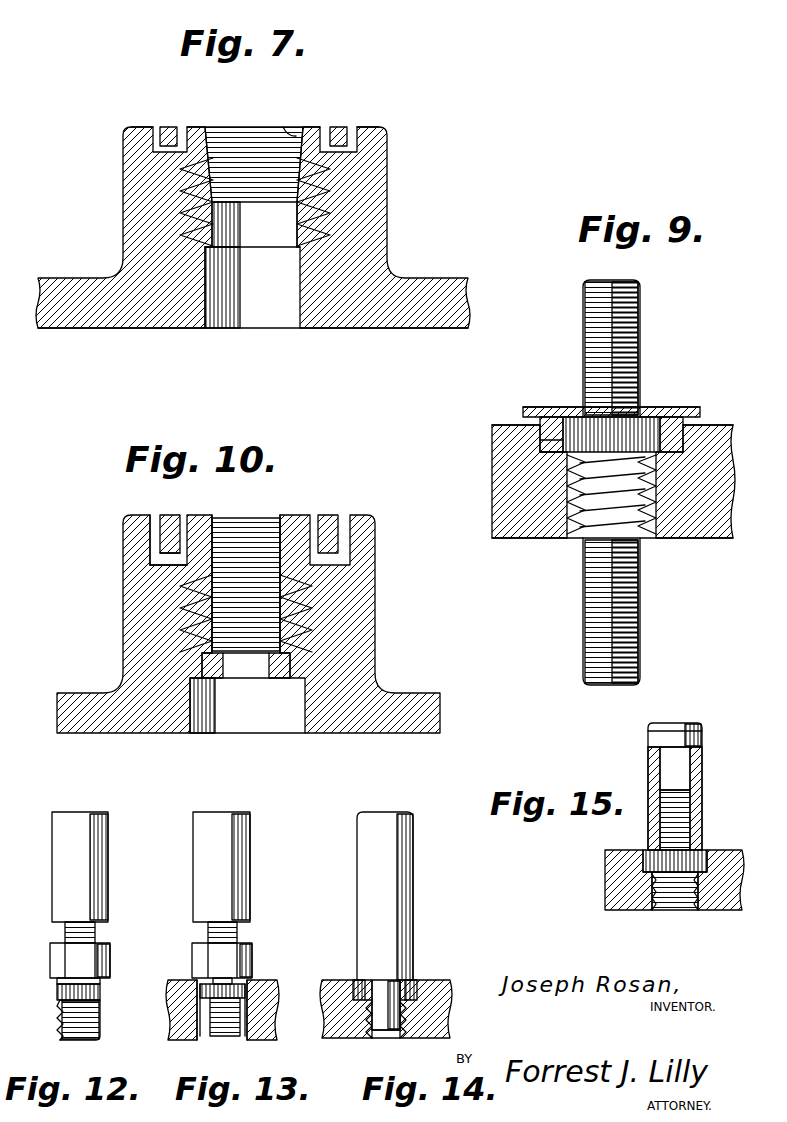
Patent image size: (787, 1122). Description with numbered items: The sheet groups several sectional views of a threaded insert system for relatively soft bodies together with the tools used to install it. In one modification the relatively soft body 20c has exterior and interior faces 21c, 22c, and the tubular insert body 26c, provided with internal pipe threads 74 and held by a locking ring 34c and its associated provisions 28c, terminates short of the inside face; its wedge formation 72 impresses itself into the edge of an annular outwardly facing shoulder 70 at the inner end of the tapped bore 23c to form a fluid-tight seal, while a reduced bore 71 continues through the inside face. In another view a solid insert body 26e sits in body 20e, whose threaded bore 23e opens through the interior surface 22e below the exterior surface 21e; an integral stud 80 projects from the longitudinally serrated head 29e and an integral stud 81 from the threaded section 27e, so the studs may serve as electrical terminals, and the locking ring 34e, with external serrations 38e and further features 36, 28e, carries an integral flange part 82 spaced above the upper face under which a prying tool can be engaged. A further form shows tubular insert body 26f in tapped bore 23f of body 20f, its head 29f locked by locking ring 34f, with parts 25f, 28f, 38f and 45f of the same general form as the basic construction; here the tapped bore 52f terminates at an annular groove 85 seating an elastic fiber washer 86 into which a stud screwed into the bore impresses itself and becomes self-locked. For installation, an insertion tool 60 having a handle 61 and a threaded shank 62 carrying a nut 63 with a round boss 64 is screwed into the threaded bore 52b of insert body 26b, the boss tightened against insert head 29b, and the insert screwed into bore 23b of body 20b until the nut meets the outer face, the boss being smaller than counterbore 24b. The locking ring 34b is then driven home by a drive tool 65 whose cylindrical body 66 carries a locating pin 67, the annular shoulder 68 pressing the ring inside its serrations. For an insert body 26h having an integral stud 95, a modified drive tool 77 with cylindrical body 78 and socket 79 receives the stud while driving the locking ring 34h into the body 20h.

In FIG. 7, the relatively soft body 20c is at (121, 217).
In FIG. 7, the exterior face 21c is at (366, 128).
In FIG. 7, the interior face 22c is at (367, 329).
In FIG. 7, the tapped bore 23c is at (328, 200).
In FIG. 7, the tubular insert body 26c is at (176, 185).
In FIG. 7, the thread of insert 28c is at (328, 180).
In FIG. 7, the locking ring 34c is at (164, 126).
In FIG. 7, the annular outwardly facing shoulder 70 is at (193, 243).
In FIG. 7, the reduced bore 71 is at (303, 297).
In FIG. 7, the wedge formation 72 is at (320, 243).
In FIG. 7, the internal pipe threads 74 is at (292, 131).
In FIG. 9, the integral stud 80 is at (641, 311).
In FIG. 9, the integral stud 81 is at (641, 618).
In FIG. 9, the integral flange part 82 is at (690, 406).
In FIG. 9, the relatively soft body 20e is at (489, 441).
In FIG. 9, the exterior surface 21e is at (722, 426).
In FIG. 9, the interior surface 22e is at (703, 539).
In FIG. 9, the threaded bore 23e is at (572, 508).
In FIG. 9, the solid insert body 26e is at (569, 488).
In FIG. 9, the threaded section 27e is at (590, 518).
In FIG. 9, the thread 28e is at (660, 472).
In FIG. 9, the longitudinally serrated head 29e is at (648, 420).
In FIG. 9, the locking ring 34e is at (562, 405).
In FIG. 9, the flange 36 is at (545, 440).
In FIG. 9, the external serrations 38e is at (545, 441).
In FIG. 10, the body 20f is at (367, 573).
In FIG. 10, the tapped bore 23f is at (323, 633).
In FIG. 10, the shoulder 25f is at (177, 575).
In FIG. 10, the tubular insert body 26f is at (324, 602).
In FIG. 10, the thread 28f is at (187, 630).
In FIG. 10, the head 29f is at (290, 520).
In FIG. 10, the locking ring 34f is at (333, 512).
In FIG. 10, the counterbore 38f is at (153, 530).
In FIG. 10, the key slot 45f is at (173, 565).
In FIG. 10, the tapped bore 52f is at (215, 527).
In FIG. 10, the annular groove 85 is at (293, 665).
In FIG. 10, the elastic washer 86 is at (272, 674).
In FIG. 12, the insertion tool 60 is at (100, 876).
In FIG. 13, the insertion tool 60 is at (240, 885).
In FIG. 12, the head or handle 61 is at (108, 876).
In FIG. 13, the head or handle 61 is at (251, 872).
In FIG. 12, the threaded shank 62 is at (96, 933).
In FIG. 13, the threaded shank 62 is at (238, 932).
In FIG. 12, the nut 63 is at (110, 957).
In FIG. 12, the round boss 64 is at (73, 977).
In FIG. 13, the round boss 64 is at (213, 978).
In FIG. 12, the tubular insert body 26b is at (51, 998).
In FIG. 13, the tubular insert body 26b is at (248, 1020).
In FIG. 14, the tubular insert body 26b is at (410, 1030).
In FIG. 12, the insert head 29b is at (101, 990).
In FIG. 12, the threaded bore 52b is at (75, 1017).
In FIG. 13, the body 20b is at (167, 1022).
In FIG. 14, the body 20b is at (352, 1039).
In FIG. 13, the bore 23b is at (183, 1037).
In FIG. 13, the counterbore 24b is at (248, 985).
In FIG. 14, the drive tool 65 is at (406, 917).
In FIG. 14, the cylindrical body 66 is at (390, 889).
In FIG. 14, the locating pin 67 is at (387, 983).
In FIG. 14, the annular shoulder 68 is at (360, 979).
In FIG. 14, the locking ring 34b is at (410, 988).
In FIG. 15, the modified drive tool 77 is at (676, 783).
In FIG. 15, the cylindrical body 78 is at (703, 786).
In FIG. 15, the socket 79 is at (660, 764).
In FIG. 15, the integral stud 95 is at (681, 819).
In FIG. 15, the workpiece 20h is at (710, 911).
In FIG. 15, the locking collar 34h is at (641, 863).
In FIG. 15, the insert body 26h is at (650, 891).